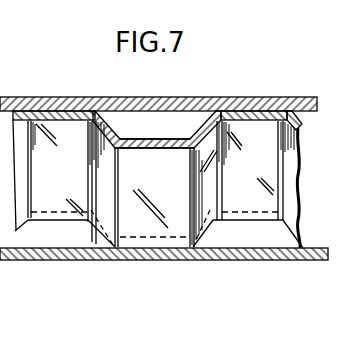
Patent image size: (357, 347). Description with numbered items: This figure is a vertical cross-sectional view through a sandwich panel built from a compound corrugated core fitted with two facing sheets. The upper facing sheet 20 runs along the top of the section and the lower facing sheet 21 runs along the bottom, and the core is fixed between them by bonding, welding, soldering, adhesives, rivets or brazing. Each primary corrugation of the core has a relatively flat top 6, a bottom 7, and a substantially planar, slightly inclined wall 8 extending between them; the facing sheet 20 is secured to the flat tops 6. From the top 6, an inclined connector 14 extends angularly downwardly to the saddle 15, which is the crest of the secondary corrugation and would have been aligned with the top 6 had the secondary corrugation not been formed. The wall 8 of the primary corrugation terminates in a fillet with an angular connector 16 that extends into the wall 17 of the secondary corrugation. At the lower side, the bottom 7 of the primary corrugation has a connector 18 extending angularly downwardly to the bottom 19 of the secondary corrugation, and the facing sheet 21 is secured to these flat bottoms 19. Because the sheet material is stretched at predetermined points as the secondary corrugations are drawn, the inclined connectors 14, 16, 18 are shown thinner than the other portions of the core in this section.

The top 6 is at (60, 110).
The bottom 7 is at (37, 230).
The wall 8 is at (63, 194).
The connector 14 is at (116, 120).
The saddle 15 is at (160, 131).
The connector 16 is at (95, 162).
The wall 17 is at (160, 186).
The connector 18 is at (98, 237).
The bottom 19 is at (137, 247).
The facing sheet 20 is at (267, 103).
The facing sheet 21 is at (261, 261).